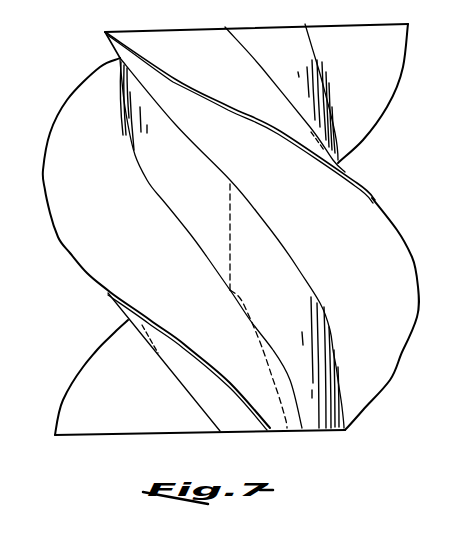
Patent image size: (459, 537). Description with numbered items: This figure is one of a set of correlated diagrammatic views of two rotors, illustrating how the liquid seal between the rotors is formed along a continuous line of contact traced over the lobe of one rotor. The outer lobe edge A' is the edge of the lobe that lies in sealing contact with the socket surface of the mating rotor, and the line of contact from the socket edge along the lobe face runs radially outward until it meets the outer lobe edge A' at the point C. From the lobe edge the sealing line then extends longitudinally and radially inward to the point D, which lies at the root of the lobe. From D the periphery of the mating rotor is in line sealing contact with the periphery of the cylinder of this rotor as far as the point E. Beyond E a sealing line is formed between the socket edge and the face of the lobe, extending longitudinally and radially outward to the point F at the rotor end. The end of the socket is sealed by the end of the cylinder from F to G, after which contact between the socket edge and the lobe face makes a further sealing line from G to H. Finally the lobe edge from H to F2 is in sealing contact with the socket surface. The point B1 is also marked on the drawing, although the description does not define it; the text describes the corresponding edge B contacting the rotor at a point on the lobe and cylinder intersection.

The outer lobe edge A' is at (244, 31).
The top edge point B1 is at (228, 27).
The intersection point C is at (348, 178).
The lobe root point D is at (230, 184).
The cylinder contact point E is at (232, 290).
The rotor end point F is at (290, 432).
The lobe edge end point F2 is at (272, 429).
The cylinder end seal point G is at (333, 178).
The seal line point H is at (146, 315).